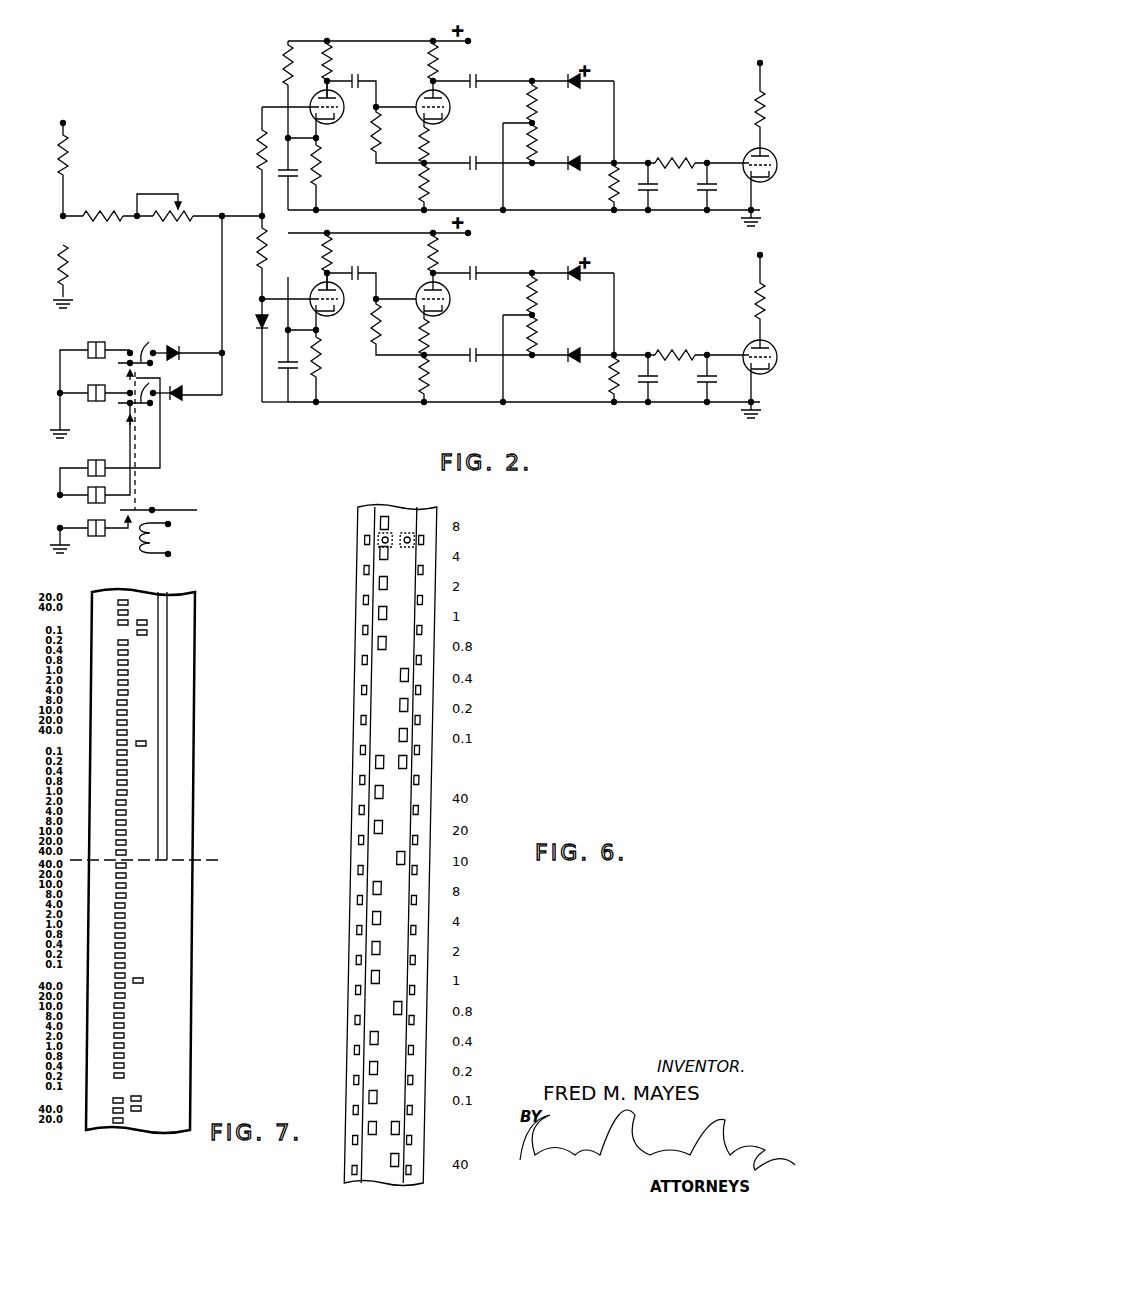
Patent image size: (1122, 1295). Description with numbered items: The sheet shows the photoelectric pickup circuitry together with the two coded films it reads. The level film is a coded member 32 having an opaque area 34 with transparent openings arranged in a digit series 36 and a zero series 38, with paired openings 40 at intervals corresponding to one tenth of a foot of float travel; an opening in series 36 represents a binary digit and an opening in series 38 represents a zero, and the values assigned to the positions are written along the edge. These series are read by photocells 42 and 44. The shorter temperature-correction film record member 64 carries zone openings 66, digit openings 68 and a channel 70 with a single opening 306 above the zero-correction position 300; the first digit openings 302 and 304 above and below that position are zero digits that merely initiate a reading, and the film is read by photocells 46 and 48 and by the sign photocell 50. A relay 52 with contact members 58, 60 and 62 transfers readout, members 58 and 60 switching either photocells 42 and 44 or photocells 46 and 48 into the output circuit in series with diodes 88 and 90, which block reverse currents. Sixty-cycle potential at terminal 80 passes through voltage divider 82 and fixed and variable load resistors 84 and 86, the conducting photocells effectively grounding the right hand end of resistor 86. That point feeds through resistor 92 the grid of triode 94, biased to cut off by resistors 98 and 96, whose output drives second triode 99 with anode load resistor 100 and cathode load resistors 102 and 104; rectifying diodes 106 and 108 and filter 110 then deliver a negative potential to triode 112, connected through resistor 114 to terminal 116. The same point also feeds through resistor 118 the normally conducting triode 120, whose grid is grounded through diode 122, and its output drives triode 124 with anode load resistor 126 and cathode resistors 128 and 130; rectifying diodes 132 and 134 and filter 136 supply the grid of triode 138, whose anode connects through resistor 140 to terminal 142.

In FIG. 6, the coded member 32 is at (371, 768).
In FIG. 6, the opaque area 34 is at (419, 617).
In FIG. 6, the digit openings 36 is at (414, 735).
In FIG. 6, the zero openings 38 is at (391, 643).
In FIG. 6, the paired openings 40 is at (404, 768).
In FIG. 2, the photocell 42 is at (96, 342).
In FIG. 6, the photocell 42 is at (388, 528).
In FIG. 2, the photocell 44 is at (98, 408).
In FIG. 6, the photocell 44 is at (421, 530).
In FIG. 2, the photocell 46 is at (91, 460).
In FIG. 2, the photocell 48 is at (88, 493).
In FIG. 2, the third photocell 50 is at (88, 526).
In FIG. 2, the relay 52 is at (152, 532).
In FIG. 2, the contact member 58 is at (143, 348).
In FIG. 2, the contact member 60 is at (146, 410).
In FIG. 2, the contact member 62 is at (150, 510).
In FIG. 7, the film record member 64 is at (180, 977).
In FIG. 7, the series of openings 66 is at (122, 594).
In FIG. 7, the series of openings 68 is at (144, 603).
In FIG. 7, the channel 70 is at (162, 590).
In FIG. 2, the terminal 80 is at (68, 122).
In FIG. 2, the voltage divider 82 is at (51, 167).
In FIG. 2, the fixed load resistor 84 is at (103, 223).
In FIG. 2, the variable load resistor 86 is at (179, 220).
In FIG. 2, the diode 88 is at (176, 350).
In FIG. 2, the diode 90 is at (176, 405).
In FIG. 2, the resistor 92 is at (254, 161).
In FIG. 2, the triode 94 is at (338, 120).
In FIG. 2, the resistor 96 is at (322, 169).
In FIG. 2, the resistor 98 is at (284, 64).
In FIG. 2, the second triode 99 is at (428, 94).
In FIG. 2, the anode load resistor 100 is at (442, 61).
In FIG. 2, the cathode load resistor 102 is at (432, 146).
In FIG. 2, the cathode load resistor 104 is at (431, 182).
In FIG. 2, the rectifying diode 106 is at (568, 76).
In FIG. 2, the rectifying diode 108 is at (570, 171).
In FIG. 2, the filter 110 is at (682, 152).
In FIG. 2, the triode 112 is at (772, 152).
In FIG. 2, the resistor 114 is at (758, 116).
In FIG. 2, the terminal 116 is at (760, 63).
In FIG. 2, the resistor 118 is at (256, 261).
In FIG. 2, the triode 120 is at (330, 314).
In FIG. 2, the diode 122 is at (255, 317).
In FIG. 2, the triode 124 is at (423, 291).
In FIG. 2, the anode load resistor 126 is at (440, 256).
In FIG. 2, the cathode resistor 128 is at (428, 338).
In FIG. 2, the cathode resistor 130 is at (430, 374).
In FIG. 2, the rectifying diode 132 is at (566, 274).
In FIG. 2, the rectifying diode 134 is at (566, 365).
In FIG. 2, the filter 136 is at (688, 350).
In FIG. 2, the triode 138 is at (772, 345).
In FIG. 2, the resistor 140 is at (754, 319).
In FIG. 2, the terminal 142 is at (757, 255).
In FIG. 7, the zero correction position 300 is at (213, 860).
In FIG. 7, the first opening 302 is at (147, 747).
In FIG. 7, the first opening 304 is at (138, 984).
In FIG. 7, the single opening 306 is at (167, 742).